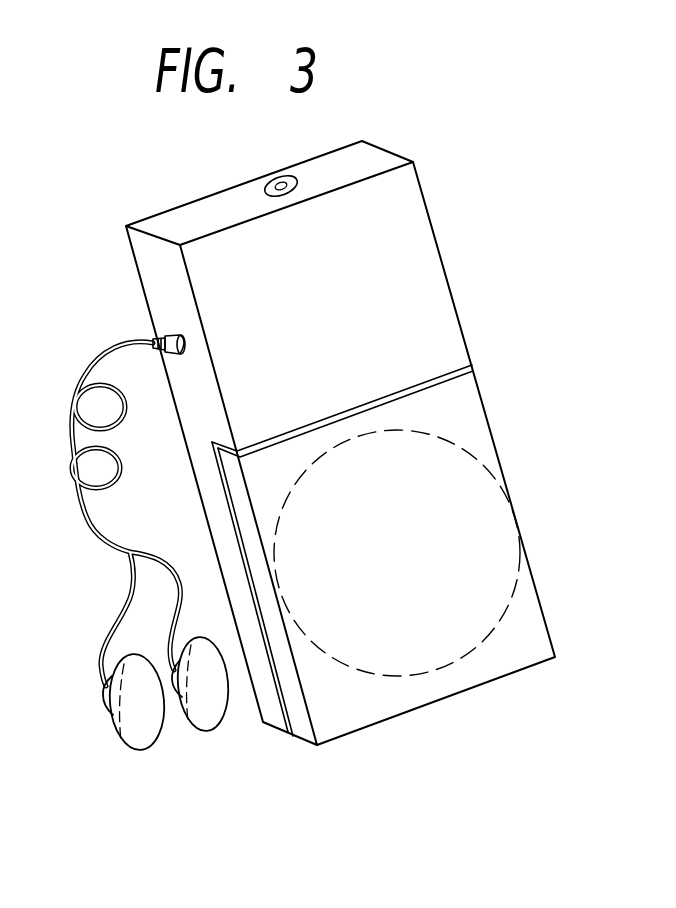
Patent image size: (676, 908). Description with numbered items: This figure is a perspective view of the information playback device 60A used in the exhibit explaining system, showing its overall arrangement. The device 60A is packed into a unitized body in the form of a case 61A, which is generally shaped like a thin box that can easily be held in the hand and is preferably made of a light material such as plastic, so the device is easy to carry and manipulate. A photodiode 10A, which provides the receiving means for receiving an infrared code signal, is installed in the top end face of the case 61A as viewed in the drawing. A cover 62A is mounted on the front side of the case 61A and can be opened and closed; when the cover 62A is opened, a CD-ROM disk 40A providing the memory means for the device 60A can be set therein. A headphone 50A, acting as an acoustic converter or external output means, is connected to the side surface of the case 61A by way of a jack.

The information playback device 60A is at (72, 236).
The case 61A is at (440, 237).
The cover 62A is at (482, 433).
The CD-ROM disk 40A is at (510, 512).
The photodiode 10A is at (275, 182).
The headphone 50A is at (195, 757).